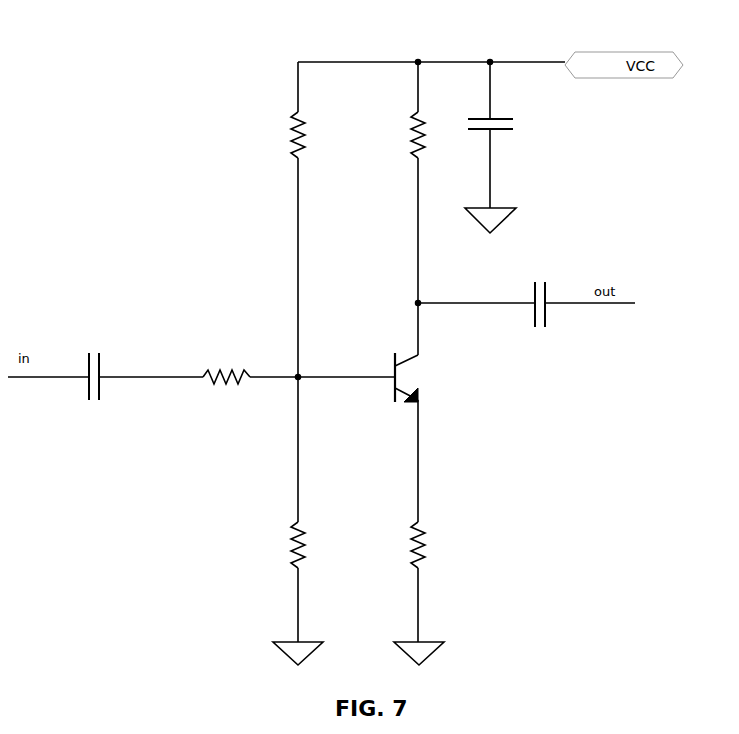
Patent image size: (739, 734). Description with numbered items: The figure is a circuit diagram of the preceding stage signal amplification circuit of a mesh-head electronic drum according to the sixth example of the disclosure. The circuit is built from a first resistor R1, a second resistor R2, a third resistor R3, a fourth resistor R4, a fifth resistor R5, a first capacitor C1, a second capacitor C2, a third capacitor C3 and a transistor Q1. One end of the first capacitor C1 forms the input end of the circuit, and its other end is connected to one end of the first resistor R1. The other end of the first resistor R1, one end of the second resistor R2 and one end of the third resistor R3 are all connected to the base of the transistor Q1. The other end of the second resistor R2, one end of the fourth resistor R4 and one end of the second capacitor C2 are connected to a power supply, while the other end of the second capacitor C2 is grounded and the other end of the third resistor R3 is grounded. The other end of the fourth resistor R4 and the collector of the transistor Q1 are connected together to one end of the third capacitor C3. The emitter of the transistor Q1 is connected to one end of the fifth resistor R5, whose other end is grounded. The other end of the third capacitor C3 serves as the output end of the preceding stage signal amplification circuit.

The first resistor R1 is at (214, 360).
The second resistor R2 is at (309, 135).
The third resistor R3 is at (309, 545).
The fourth resistor R4 is at (429, 135).
The fifth resistor R5 is at (429, 545).
The first capacitor C1 is at (78, 367).
The second capacitor C2 is at (502, 126).
The third capacitor C3 is at (535, 295).
The transistor Q1 is at (421, 377).